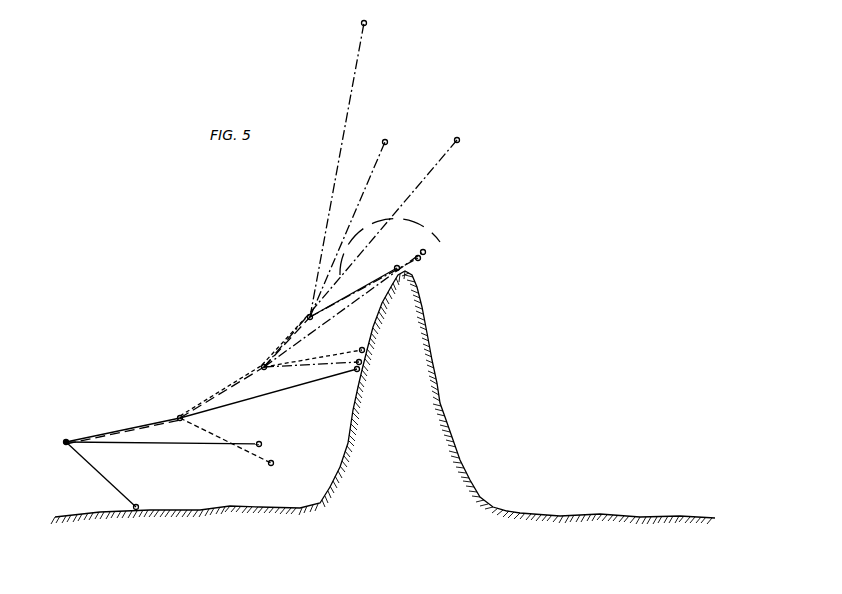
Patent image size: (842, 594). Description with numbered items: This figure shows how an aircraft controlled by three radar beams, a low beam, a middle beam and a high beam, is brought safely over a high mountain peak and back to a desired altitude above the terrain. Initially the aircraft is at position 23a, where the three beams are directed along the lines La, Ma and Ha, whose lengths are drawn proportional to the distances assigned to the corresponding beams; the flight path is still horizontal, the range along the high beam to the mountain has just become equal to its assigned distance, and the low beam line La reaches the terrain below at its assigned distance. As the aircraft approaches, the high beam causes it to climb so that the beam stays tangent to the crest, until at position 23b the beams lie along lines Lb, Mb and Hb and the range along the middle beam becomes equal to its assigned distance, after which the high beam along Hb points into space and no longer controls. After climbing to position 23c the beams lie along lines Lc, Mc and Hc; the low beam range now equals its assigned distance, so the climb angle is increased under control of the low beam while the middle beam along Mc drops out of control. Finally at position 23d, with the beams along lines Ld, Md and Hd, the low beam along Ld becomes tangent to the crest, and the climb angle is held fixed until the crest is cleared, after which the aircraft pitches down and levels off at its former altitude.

The initial aircraft position 23a is at (66, 442).
The second aircraft position 23b is at (183, 418).
The third aircraft position 23c is at (264, 364).
The fourth aircraft position 23d is at (309, 314).
The high beam line at first position Ha is at (149, 416).
The high beam line at second position Hb is at (236, 381).
The high beam line at third position Hc is at (446, 158).
The high beam line at fourth position Hd is at (368, 43).
The middle beam line at first position Ma is at (160, 445).
The middle beam line at second position Mb is at (292, 379).
The middle beam line at third position Mc is at (336, 320).
The middle beam line at fourth position Md is at (382, 154).
The low beam line at first position La is at (94, 468).
The low beam line at second position Lb is at (276, 462).
The low beam line at third position Lc is at (300, 362).
The low beam line at fourth position Ld is at (365, 282).